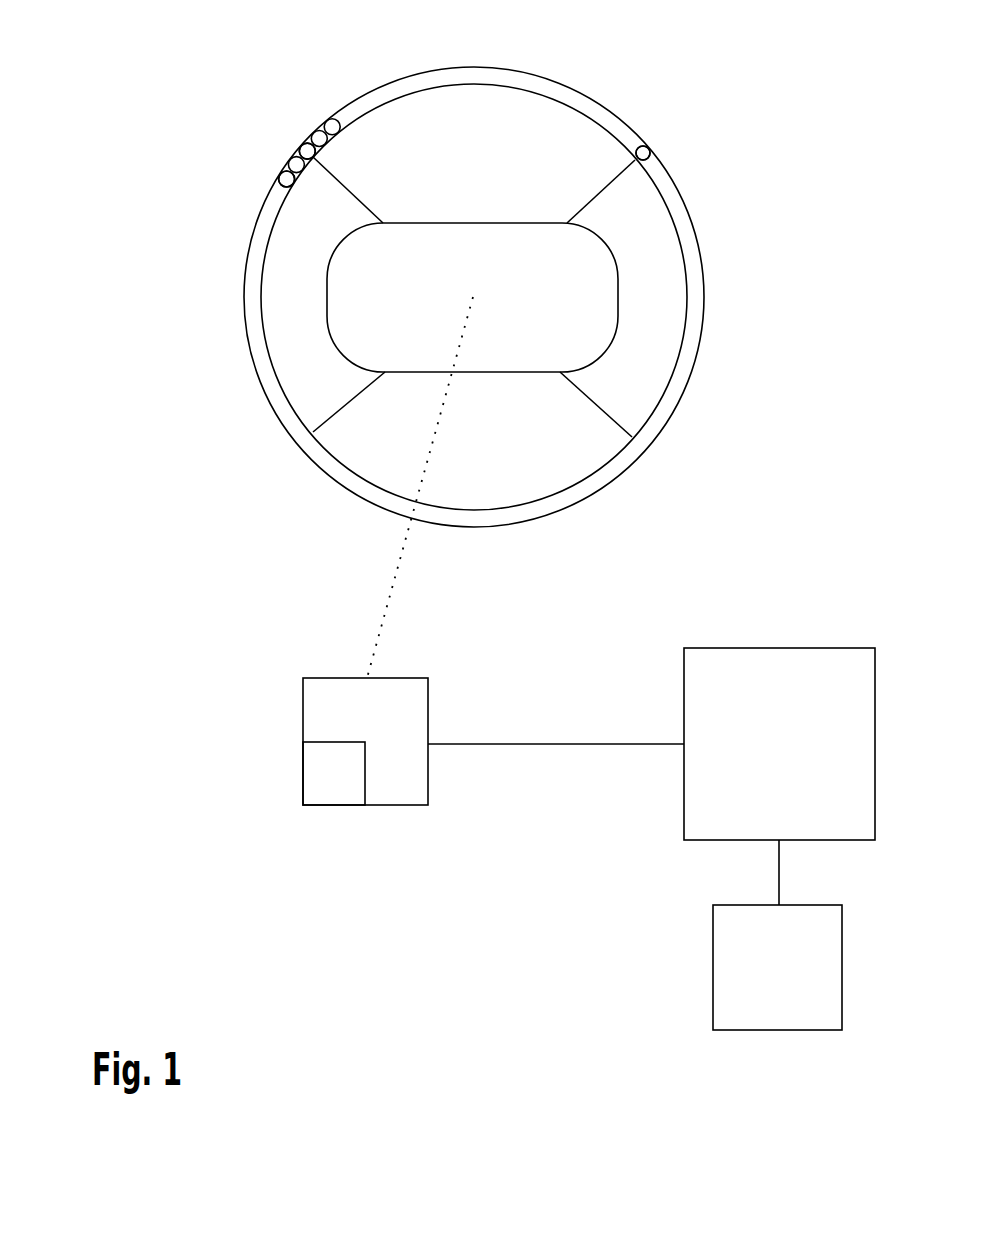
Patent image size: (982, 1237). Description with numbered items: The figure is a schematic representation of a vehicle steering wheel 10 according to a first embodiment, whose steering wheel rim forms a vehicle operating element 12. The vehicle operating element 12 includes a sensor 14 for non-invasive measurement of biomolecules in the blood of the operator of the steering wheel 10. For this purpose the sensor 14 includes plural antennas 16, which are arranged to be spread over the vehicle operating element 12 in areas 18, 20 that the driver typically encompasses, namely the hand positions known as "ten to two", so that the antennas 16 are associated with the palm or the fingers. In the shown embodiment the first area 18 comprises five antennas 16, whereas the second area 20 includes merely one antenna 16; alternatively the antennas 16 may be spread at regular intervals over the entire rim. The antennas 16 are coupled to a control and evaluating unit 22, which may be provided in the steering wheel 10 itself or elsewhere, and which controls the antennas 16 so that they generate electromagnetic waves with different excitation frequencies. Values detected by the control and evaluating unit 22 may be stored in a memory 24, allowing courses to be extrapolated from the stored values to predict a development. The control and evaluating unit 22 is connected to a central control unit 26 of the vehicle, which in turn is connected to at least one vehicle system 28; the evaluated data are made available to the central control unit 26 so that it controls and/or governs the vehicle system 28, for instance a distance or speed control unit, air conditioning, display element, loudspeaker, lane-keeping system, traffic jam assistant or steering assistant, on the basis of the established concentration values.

The vehicle steering wheel 10 is at (462, 339).
The vehicle operating element 12 is at (463, 78).
The sensor 14 is at (308, 100).
The antennas 16 is at (651, 154).
The first area 18 is at (275, 122).
The second area 20 is at (653, 147).
The control and evaluating unit 22 is at (403, 707).
The memory 24 is at (327, 782).
The central control unit 26 is at (776, 678).
The vehicle system 28 is at (737, 987).